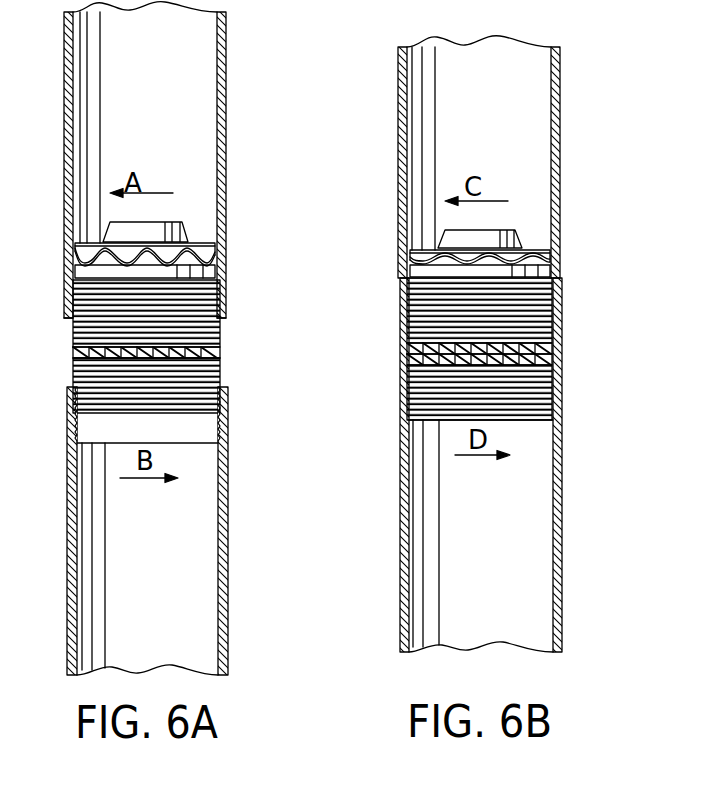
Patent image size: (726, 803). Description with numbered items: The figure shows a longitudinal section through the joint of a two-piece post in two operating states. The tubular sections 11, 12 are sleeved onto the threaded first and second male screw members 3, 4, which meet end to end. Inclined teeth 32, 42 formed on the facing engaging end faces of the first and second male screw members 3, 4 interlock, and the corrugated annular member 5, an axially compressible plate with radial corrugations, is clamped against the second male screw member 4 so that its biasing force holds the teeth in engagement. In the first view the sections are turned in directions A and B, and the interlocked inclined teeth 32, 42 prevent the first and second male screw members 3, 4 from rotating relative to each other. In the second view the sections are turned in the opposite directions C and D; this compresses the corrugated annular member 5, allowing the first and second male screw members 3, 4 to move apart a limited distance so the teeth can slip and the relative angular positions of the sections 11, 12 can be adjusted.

In FIG. 6A, the section 12 is at (226, 176).
In FIG. 6B, the section 12 is at (560, 185).
In FIG. 6A, the section 11 is at (228, 477).
In FIG. 6B, the section 11 is at (562, 480).
In FIG. 6A, the corrugated annular member 5 is at (215, 258).
In FIG. 6B, the corrugated annular member 5 is at (550, 258).
In FIG. 6A, the second male screw member 4 is at (208, 300).
In FIG. 6B, the second male screw member 4 is at (545, 298).
In FIG. 6A, the inclined teeth 42 is at (216, 352).
In FIG. 6B, the inclined teeth 42 is at (552, 347).
In FIG. 6A, the first male screw member 3 is at (213, 397).
In FIG. 6B, the first male screw member 3 is at (548, 400).
In FIG. 6A, the inclined teeth 32 is at (216, 356).
In FIG. 6B, the inclined teeth 32 is at (552, 358).